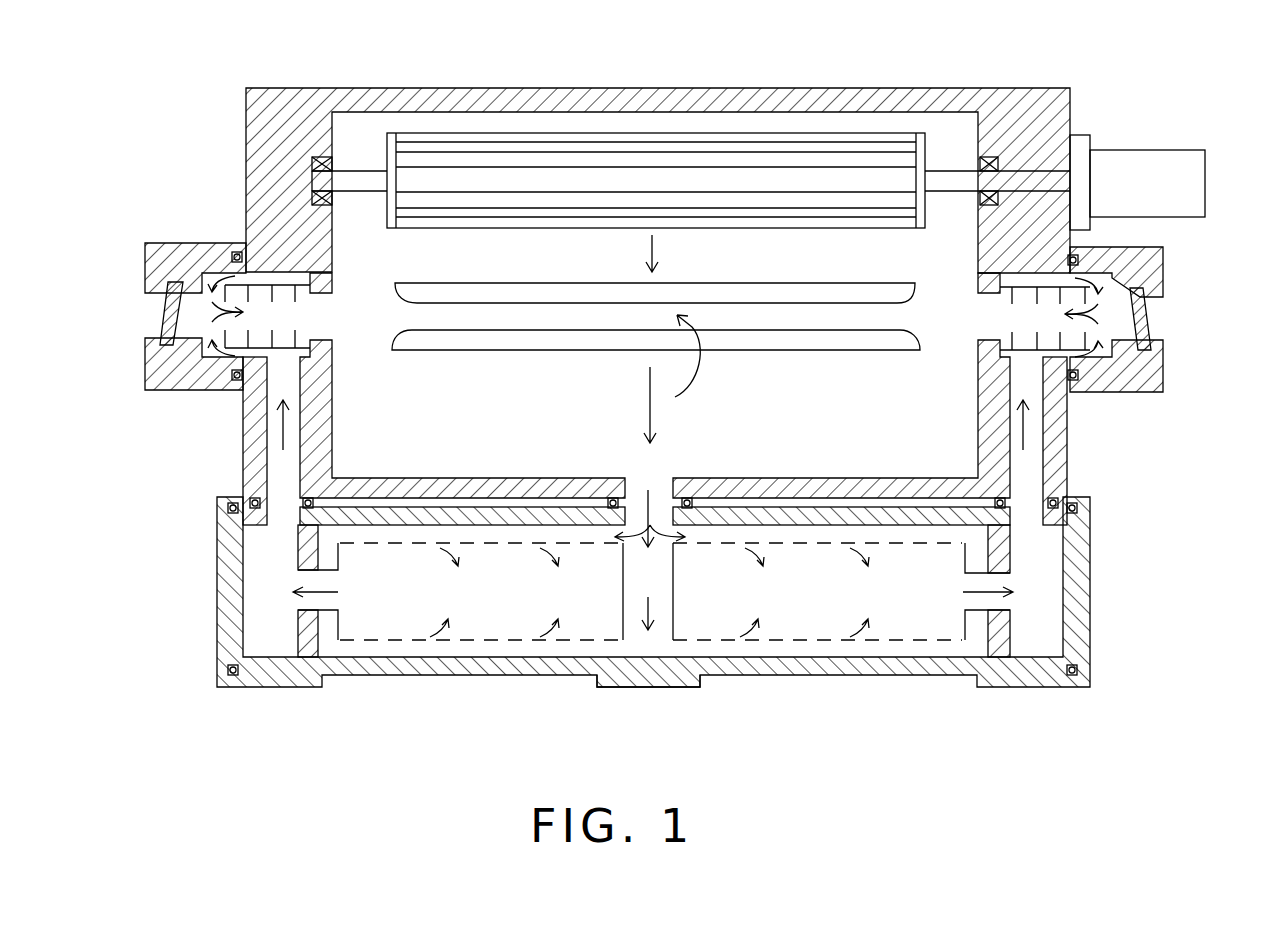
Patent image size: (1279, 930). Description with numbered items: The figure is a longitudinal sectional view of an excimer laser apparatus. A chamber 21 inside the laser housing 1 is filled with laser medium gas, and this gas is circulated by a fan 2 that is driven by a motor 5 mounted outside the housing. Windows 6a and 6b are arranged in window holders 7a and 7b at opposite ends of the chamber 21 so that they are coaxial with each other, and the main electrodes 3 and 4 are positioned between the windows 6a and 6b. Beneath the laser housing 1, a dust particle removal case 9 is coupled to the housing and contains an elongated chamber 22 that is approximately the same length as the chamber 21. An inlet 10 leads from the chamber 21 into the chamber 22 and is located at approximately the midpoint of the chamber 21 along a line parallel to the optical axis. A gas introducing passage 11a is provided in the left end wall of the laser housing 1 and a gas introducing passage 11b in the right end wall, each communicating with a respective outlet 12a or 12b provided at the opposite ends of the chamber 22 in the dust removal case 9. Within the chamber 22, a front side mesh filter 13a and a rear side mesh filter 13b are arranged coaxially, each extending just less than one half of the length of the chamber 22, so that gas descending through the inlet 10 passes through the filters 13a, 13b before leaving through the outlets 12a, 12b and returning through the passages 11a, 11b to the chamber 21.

The laser housing 1 is at (350, 88).
The fan 2 is at (537, 133).
The main electrode 3 is at (537, 283).
The main electrode 4 is at (545, 352).
The motor 5 is at (1175, 148).
The window 6a is at (162, 305).
The window 6b is at (1152, 308).
The window holder 7a is at (145, 352).
The window holder 7b is at (1165, 372).
The dust particle removal case 9 is at (933, 673).
The inlet 10 is at (633, 477).
The gas introducing passage 11a is at (262, 443).
The gas introducing passage 11b is at (1035, 433).
The outlet 12a is at (257, 553).
The outlet 12b is at (1028, 555).
The front side mesh filter 13a is at (433, 640).
The rear side mesh filter 13b is at (785, 642).
The chamber 21 is at (421, 443).
The chamber 22 is at (647, 645).